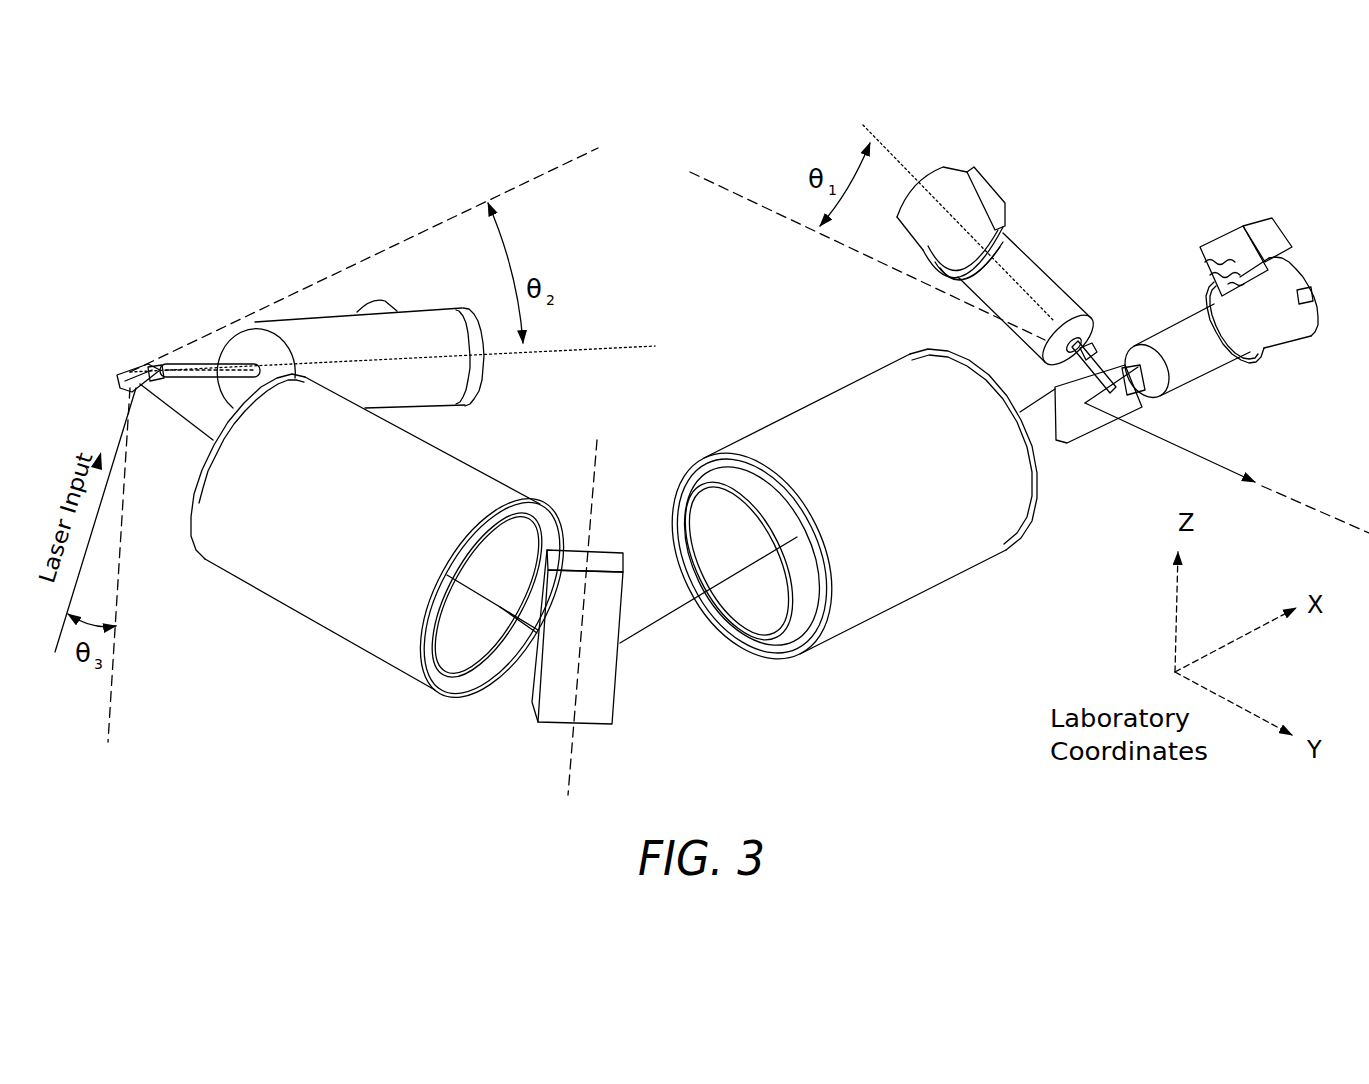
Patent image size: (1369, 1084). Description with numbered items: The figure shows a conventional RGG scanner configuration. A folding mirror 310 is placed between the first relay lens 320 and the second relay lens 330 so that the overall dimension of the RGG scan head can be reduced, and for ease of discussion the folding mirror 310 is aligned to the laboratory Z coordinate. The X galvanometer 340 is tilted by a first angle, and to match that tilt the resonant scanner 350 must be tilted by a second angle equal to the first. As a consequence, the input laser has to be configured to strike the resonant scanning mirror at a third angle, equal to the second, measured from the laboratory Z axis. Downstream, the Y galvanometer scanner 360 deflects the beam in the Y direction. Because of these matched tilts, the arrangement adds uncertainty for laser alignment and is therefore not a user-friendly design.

The folding mirror 310 is at (593, 710).
The first relay lens 320 is at (392, 642).
The second relay lens 330 is at (853, 610).
The X galvanometer 340 is at (1027, 277).
The resonant scanner 350 is at (437, 387).
The Y galvanometer scanner 360 is at (1202, 360).